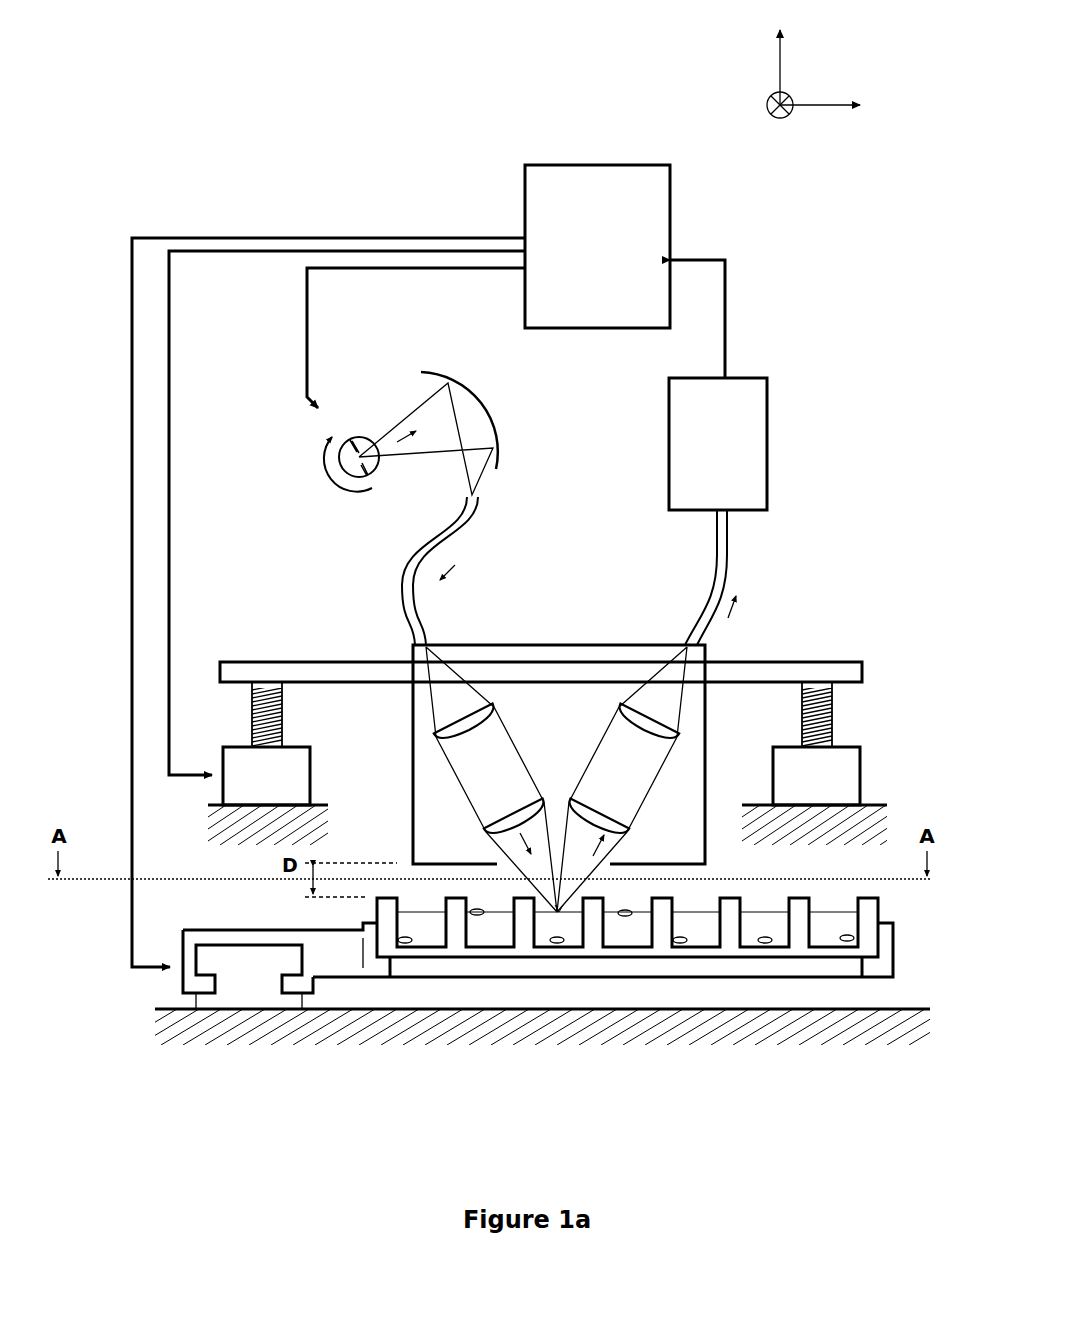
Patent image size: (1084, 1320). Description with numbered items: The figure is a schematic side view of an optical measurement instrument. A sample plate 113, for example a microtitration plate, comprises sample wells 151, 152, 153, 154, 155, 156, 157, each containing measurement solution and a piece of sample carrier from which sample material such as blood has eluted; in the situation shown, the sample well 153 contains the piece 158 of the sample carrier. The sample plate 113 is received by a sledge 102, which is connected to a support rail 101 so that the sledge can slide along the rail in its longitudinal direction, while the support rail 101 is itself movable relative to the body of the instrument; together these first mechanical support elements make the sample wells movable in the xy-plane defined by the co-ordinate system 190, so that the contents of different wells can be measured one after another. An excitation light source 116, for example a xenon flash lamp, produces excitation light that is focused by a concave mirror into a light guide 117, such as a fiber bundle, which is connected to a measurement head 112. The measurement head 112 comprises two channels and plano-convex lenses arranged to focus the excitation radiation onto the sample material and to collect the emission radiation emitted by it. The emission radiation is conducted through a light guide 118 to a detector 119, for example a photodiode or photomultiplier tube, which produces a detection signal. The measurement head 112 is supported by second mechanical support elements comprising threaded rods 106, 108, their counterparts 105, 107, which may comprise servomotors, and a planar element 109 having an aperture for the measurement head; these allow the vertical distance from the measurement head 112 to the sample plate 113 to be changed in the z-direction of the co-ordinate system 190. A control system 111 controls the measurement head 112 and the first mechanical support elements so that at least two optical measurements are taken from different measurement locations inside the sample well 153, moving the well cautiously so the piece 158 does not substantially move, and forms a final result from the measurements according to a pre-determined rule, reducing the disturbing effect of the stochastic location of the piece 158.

The support rail 101 is at (231, 995).
The sledge 102 is at (283, 930).
The counterpart of threaded rod 105 is at (249, 785).
The threaded rod 106 is at (284, 717).
The counterpart of threaded rod 107 is at (799, 785).
The threaded rod 108 is at (802, 716).
The planar element 109 is at (813, 661).
The control system 111 is at (552, 165).
The measurement head 112 is at (540, 645).
The sample plate 113 is at (880, 903).
The excitation light source 116 is at (361, 437).
The light guide 117 is at (402, 590).
The light guide 118 is at (714, 553).
The detector 119 is at (700, 449).
The sample well 151 is at (428, 930).
The sample well 152 is at (488, 930).
The sample well 153 is at (570, 927).
The sample well 154 is at (612, 928).
The sample well 155 is at (700, 920).
The sample well 156 is at (780, 923).
The sample well 157 is at (825, 925).
The piece of sample carrier 158 is at (556, 946).
The co-ordinate system 190 is at (810, 48).